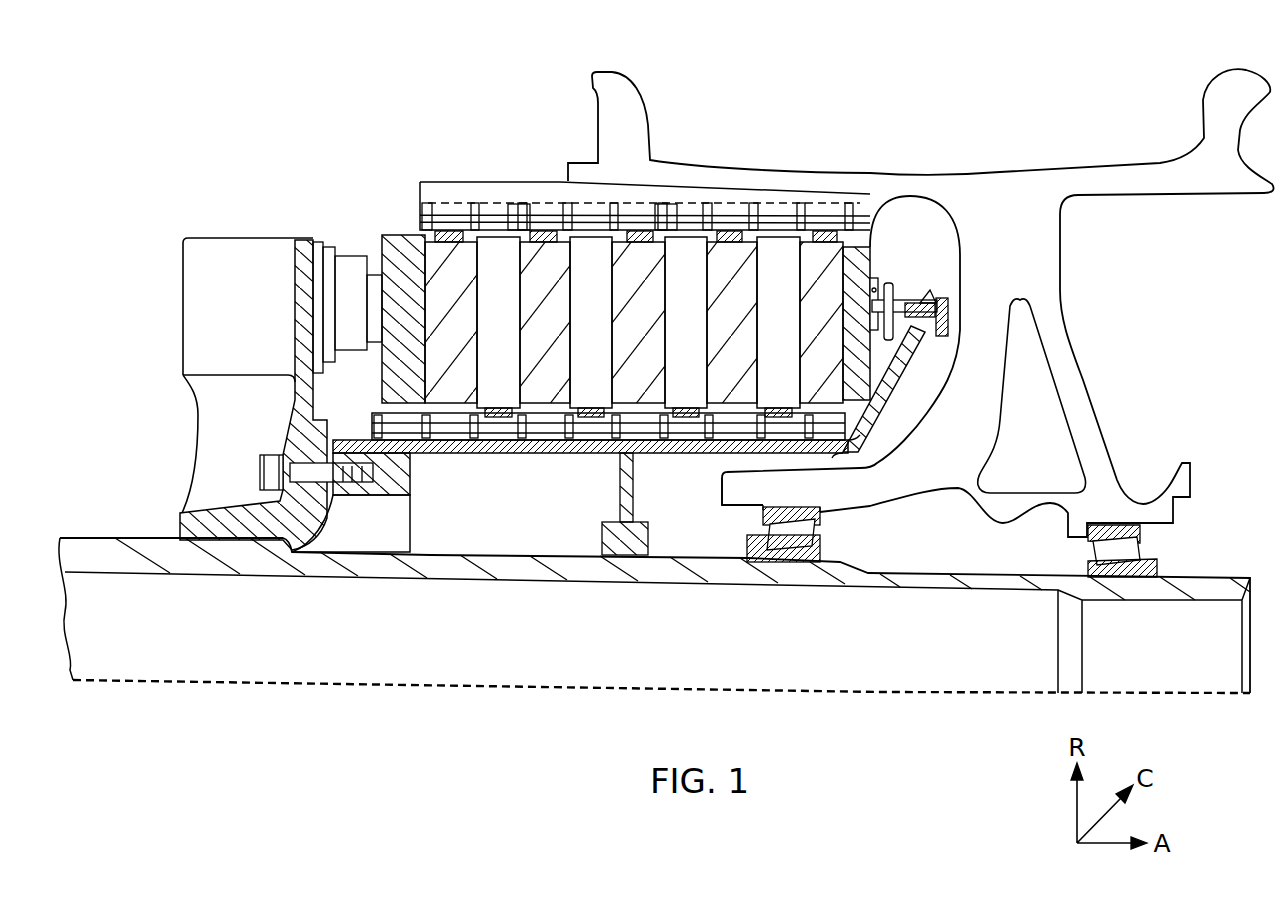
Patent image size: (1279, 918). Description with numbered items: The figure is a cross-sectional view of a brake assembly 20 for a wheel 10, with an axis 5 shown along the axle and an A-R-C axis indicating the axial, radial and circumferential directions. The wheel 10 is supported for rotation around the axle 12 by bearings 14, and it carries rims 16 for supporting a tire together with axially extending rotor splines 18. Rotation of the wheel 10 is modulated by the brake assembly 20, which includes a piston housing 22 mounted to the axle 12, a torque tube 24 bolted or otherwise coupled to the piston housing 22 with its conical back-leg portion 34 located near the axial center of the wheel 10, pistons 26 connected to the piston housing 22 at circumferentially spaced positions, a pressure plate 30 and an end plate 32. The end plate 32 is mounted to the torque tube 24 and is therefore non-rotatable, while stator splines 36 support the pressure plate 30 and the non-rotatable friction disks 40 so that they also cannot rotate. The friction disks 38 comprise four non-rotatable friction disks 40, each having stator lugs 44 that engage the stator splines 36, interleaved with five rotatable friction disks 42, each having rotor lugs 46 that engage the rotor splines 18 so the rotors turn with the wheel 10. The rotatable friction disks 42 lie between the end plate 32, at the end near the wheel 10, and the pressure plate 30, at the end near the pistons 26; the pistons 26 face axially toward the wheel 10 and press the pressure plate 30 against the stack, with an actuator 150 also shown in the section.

The centerline axis 5 is at (912, 694).
The wheel 10 is at (990, 258).
The axle 12 is at (978, 585).
The bearings 14 is at (803, 536).
The rims 16 is at (633, 84).
The rotor splines 18 is at (548, 180).
The brake assembly 20 is at (324, 186).
The piston housing 22 is at (300, 433).
The torque tube 24 is at (462, 456).
The pistons 26 is at (350, 258).
The pressure plate 30 is at (395, 238).
The end plate 32 is at (862, 245).
The conical back-leg portion 34 is at (858, 426).
The stator splines 36 is at (362, 428).
The friction disks 38 is at (412, 216).
The non-rotatable friction disk 40 is at (780, 263).
The rotatable friction disk 42 is at (447, 256).
The stator lugs 44 is at (718, 430).
The rotor lugs 46 is at (517, 208).
The actuator 150 is at (945, 290).